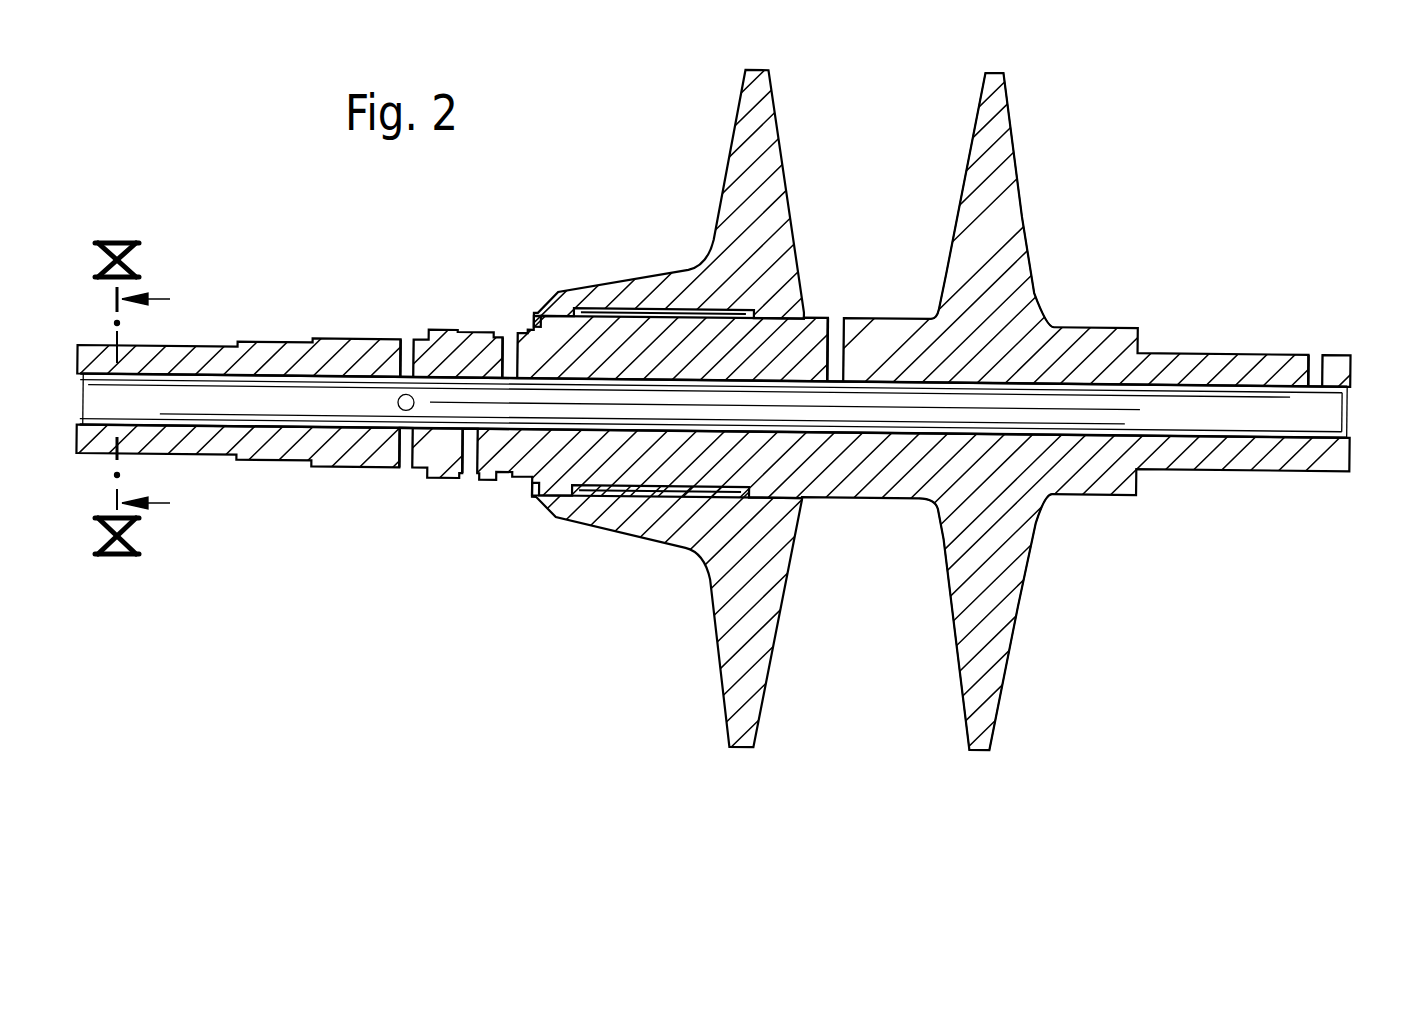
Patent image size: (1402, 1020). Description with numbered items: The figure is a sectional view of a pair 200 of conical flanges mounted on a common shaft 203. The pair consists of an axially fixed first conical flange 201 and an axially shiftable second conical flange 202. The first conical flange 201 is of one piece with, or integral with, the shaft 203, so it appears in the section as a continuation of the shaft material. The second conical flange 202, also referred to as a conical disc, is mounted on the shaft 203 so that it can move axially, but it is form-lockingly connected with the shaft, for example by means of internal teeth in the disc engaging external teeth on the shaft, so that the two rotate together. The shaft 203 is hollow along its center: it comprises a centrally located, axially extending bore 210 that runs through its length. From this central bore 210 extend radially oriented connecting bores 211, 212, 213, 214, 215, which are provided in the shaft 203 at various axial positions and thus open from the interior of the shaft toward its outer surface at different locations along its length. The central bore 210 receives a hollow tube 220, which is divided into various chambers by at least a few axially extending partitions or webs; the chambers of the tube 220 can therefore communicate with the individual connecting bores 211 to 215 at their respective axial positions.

The pair of conical flanges 200 is at (1162, 175).
The first conical flange 201 is at (1003, 238).
The second conical flange 202 is at (775, 221).
The shaft 203 is at (862, 465).
The bore 210 is at (1198, 383).
The connecting bore 211 is at (841, 362).
The connecting bore 212 is at (507, 330).
The connecting bore 213 is at (405, 336).
The connecting bore 214 is at (470, 469).
The connecting bore 215 is at (1317, 344).
The hollow tube 220 is at (1312, 420).